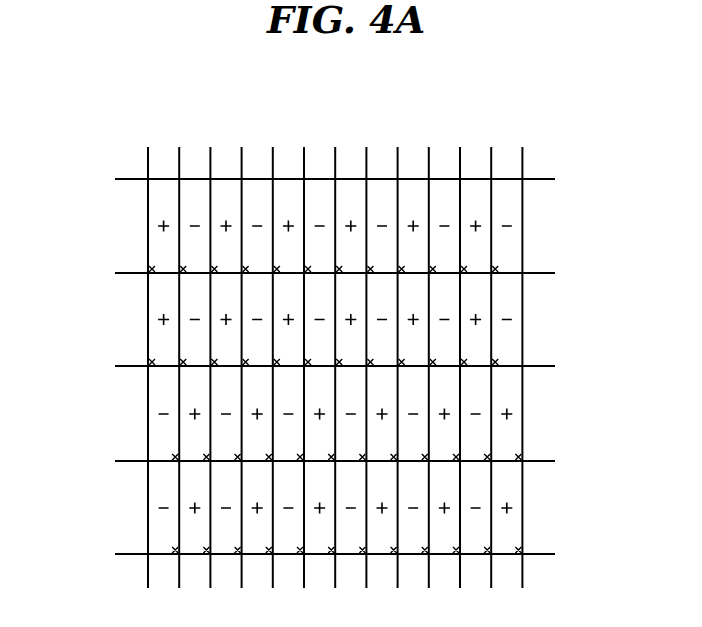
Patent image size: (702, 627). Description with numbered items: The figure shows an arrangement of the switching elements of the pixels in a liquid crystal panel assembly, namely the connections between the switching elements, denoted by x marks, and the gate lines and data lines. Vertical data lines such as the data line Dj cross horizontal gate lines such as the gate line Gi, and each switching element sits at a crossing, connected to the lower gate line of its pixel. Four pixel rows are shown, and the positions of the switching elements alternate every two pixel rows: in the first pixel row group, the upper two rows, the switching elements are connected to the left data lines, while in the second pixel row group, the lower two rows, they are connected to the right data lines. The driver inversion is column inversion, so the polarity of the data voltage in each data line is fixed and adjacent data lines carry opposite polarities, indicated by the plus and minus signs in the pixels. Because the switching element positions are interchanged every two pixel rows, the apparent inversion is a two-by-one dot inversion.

The data line Dj is at (143, 354).
The gate line Gi is at (321, 273).